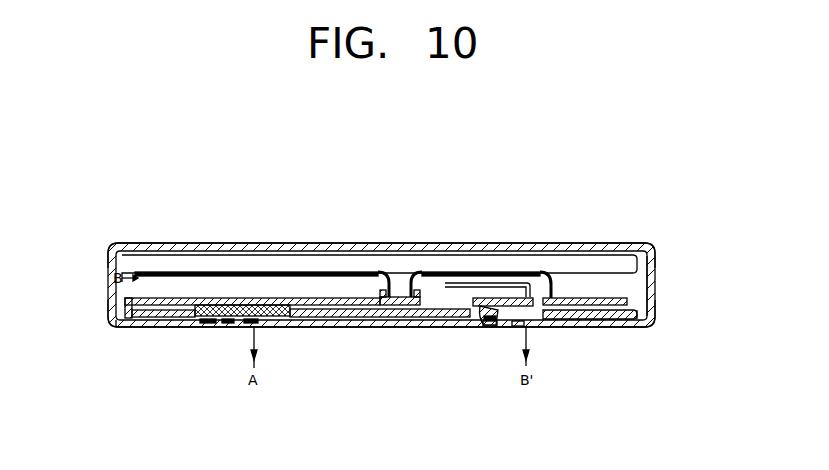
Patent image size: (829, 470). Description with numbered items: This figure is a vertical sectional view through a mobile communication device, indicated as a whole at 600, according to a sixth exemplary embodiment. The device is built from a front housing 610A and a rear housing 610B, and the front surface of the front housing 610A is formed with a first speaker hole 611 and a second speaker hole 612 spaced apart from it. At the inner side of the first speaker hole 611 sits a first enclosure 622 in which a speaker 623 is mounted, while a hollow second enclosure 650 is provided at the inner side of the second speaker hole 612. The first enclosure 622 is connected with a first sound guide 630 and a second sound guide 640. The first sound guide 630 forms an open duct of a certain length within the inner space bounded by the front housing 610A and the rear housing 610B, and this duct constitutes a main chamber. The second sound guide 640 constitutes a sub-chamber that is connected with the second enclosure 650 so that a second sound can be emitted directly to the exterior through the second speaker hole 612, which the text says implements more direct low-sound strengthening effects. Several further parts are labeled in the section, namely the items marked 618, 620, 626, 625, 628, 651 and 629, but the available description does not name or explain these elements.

The mobile terminal 600 is at (552, 209).
The front housing 610A is at (108, 302).
The rear housing 610B is at (108, 268).
The window 618 is at (633, 264).
The display unit 620 is at (395, 262).
The first sound guide 630 is at (318, 272).
The second sound guide 640 is at (513, 283).
The frame 626 is at (418, 306).
The frame portion 625 is at (377, 293).
The speaker 623 is at (210, 320).
The adhesive member 628 is at (199, 323).
The first speaker hole 611 is at (250, 327).
The second enclosure 650 is at (480, 327).
The terminal 651 is at (501, 327).
The second speaker hole 612 is at (504, 327).
The first enclosure 622 is at (140, 327).
The support portion 629 is at (624, 320).